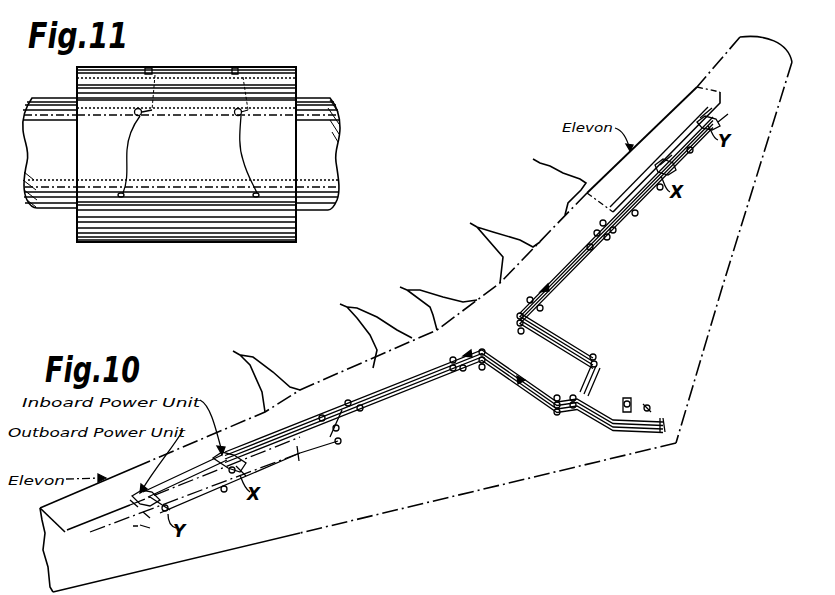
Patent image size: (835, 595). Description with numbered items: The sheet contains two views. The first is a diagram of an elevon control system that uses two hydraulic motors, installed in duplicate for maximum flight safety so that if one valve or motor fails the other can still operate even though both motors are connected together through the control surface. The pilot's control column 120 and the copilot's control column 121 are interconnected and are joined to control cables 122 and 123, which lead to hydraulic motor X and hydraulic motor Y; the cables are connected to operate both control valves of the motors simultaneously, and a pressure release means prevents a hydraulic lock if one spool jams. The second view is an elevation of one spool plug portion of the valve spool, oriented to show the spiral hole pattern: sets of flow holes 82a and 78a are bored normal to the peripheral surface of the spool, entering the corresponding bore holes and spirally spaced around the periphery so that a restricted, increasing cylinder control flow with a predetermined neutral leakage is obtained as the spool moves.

In FIG. 11, the flow holes 78a is at (254, 132).
In FIG. 11, the flow holes 82a is at (142, 132).
In FIG. 10, the pilot's control column 120 is at (627, 402).
In FIG. 10, the copilot's control column 121 is at (647, 407).
In FIG. 10, the control cable 122 is at (409, 388).
In FIG. 10, the control cable 123 is at (578, 258).